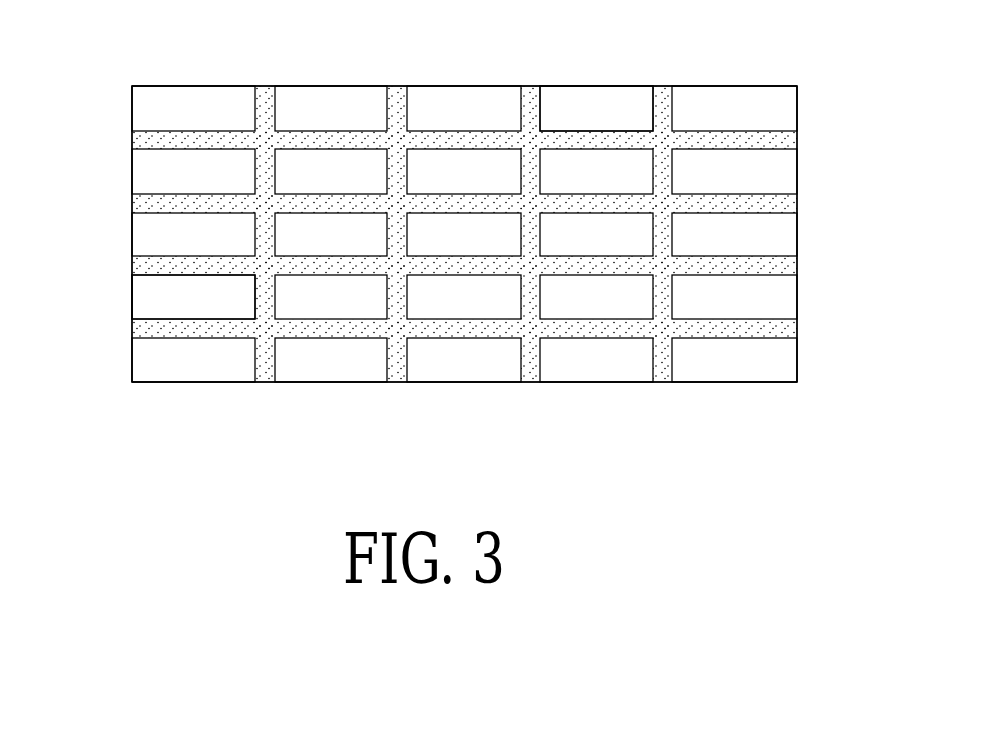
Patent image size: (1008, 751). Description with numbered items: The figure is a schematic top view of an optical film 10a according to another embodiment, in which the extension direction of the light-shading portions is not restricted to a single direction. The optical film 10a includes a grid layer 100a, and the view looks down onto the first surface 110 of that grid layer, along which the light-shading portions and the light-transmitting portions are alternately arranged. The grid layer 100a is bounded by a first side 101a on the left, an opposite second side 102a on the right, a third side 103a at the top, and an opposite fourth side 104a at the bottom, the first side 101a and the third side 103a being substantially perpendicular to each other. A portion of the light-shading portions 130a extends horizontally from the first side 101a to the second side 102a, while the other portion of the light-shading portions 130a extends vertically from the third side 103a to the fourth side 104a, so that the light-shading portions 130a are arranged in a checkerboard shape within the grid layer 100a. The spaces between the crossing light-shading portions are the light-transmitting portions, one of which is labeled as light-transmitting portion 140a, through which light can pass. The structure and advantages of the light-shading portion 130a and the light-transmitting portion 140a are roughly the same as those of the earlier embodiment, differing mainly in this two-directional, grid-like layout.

The optical film 10a is at (82, 33).
The grid layer 100a is at (131, 110).
The first side 101a is at (130, 233).
The second side 102a is at (800, 233).
The third side 103a is at (473, 85).
The fourth side 104a is at (475, 383).
The first surface 110 is at (597, 104).
The light-shading portions 130a is at (331, 338).
The light-transmitting portion 140a is at (148, 300).